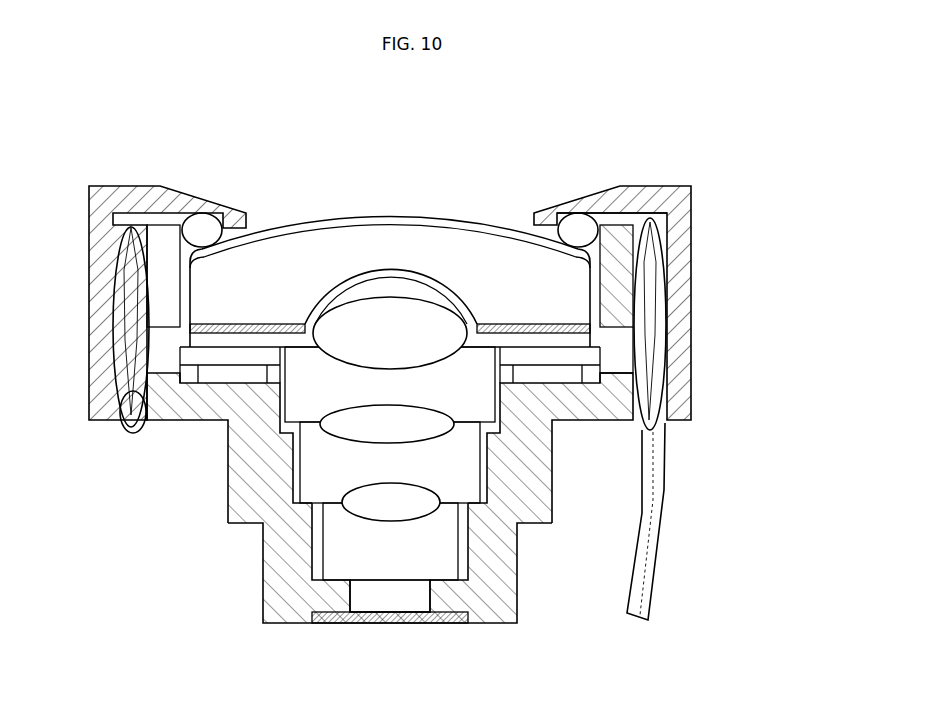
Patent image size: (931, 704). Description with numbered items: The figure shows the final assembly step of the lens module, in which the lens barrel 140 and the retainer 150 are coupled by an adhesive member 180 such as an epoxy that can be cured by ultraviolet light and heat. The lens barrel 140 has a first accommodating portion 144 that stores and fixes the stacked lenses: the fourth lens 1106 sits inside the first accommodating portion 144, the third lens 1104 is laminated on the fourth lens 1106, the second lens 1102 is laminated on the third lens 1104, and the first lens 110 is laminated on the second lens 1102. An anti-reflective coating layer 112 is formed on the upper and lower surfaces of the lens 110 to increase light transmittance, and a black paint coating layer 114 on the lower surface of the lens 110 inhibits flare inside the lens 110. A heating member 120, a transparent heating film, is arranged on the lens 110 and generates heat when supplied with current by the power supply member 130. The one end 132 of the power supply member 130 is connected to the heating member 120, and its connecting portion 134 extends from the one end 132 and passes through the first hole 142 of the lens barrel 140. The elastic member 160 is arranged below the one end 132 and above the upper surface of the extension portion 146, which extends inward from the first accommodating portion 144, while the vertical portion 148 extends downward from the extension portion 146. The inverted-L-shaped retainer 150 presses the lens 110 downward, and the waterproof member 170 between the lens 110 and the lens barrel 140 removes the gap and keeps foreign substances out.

The first lens 110 is at (500, 240).
The anti-reflective coating layer 112 is at (400, 270).
The black paint coating layer 114 is at (203, 325).
The heating member 120 is at (363, 287).
The power supply member 130 is at (667, 449).
The one end 132 is at (603, 375).
The connecting portion 134 is at (652, 508).
The lens barrel 140 is at (640, 220).
The first hole 142 is at (553, 355).
The first accommodating portion 144 is at (640, 272).
The extension portion 146 is at (570, 398).
The vertical portion 148 is at (520, 455).
The retainer 150 is at (650, 198).
The elastic member 160 is at (128, 368).
The waterproof member 170 is at (577, 230).
The adhesive member 180 is at (130, 397).
The second lens 1102 is at (320, 400).
The third lens 1104 is at (322, 462).
The fourth lens 1106 is at (348, 548).